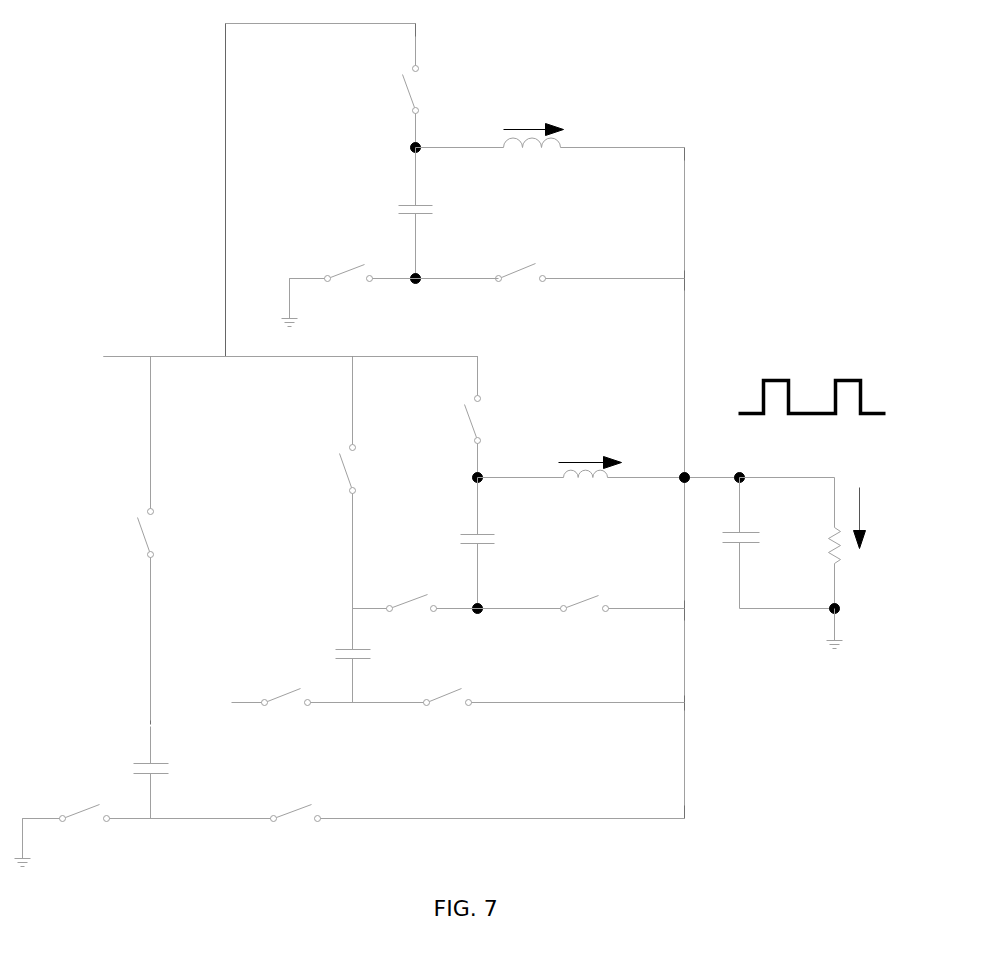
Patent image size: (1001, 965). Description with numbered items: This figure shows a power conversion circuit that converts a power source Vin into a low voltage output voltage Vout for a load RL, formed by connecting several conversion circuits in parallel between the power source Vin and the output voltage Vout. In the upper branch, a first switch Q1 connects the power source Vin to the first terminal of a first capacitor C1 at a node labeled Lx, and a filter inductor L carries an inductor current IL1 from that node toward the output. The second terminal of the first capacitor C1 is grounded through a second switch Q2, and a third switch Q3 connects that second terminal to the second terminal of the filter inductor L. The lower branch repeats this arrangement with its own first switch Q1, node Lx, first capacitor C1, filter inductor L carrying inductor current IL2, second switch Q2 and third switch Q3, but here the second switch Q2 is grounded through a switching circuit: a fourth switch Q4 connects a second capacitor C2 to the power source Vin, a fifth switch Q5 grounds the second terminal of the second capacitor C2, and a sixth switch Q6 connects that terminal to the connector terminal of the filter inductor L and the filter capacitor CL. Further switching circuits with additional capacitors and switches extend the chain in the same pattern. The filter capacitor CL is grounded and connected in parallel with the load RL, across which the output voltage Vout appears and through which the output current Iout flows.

The power source Vin is at (99, 355).
The first switch Q1 is at (428, 272).
The switching node Lx is at (460, 302).
The filter inductor L is at (578, 323).
The first inductor current IL1 is at (534, 120).
The second inductor current IL2 is at (590, 451).
The first capacitor C1 is at (460, 378).
The second switch Q2 is at (421, 455).
The third switch Q3 is at (590, 455).
The fourth switch Q4 is at (328, 503).
The second capacitor C2 is at (320, 675).
The fifth switch Q5 is at (328, 713).
The sixth switch Q6 is at (554, 713).
The output voltage Vout is at (757, 465).
The filter capacitor CL is at (779, 543).
The load RL is at (820, 563).
The output current Iout is at (875, 518).